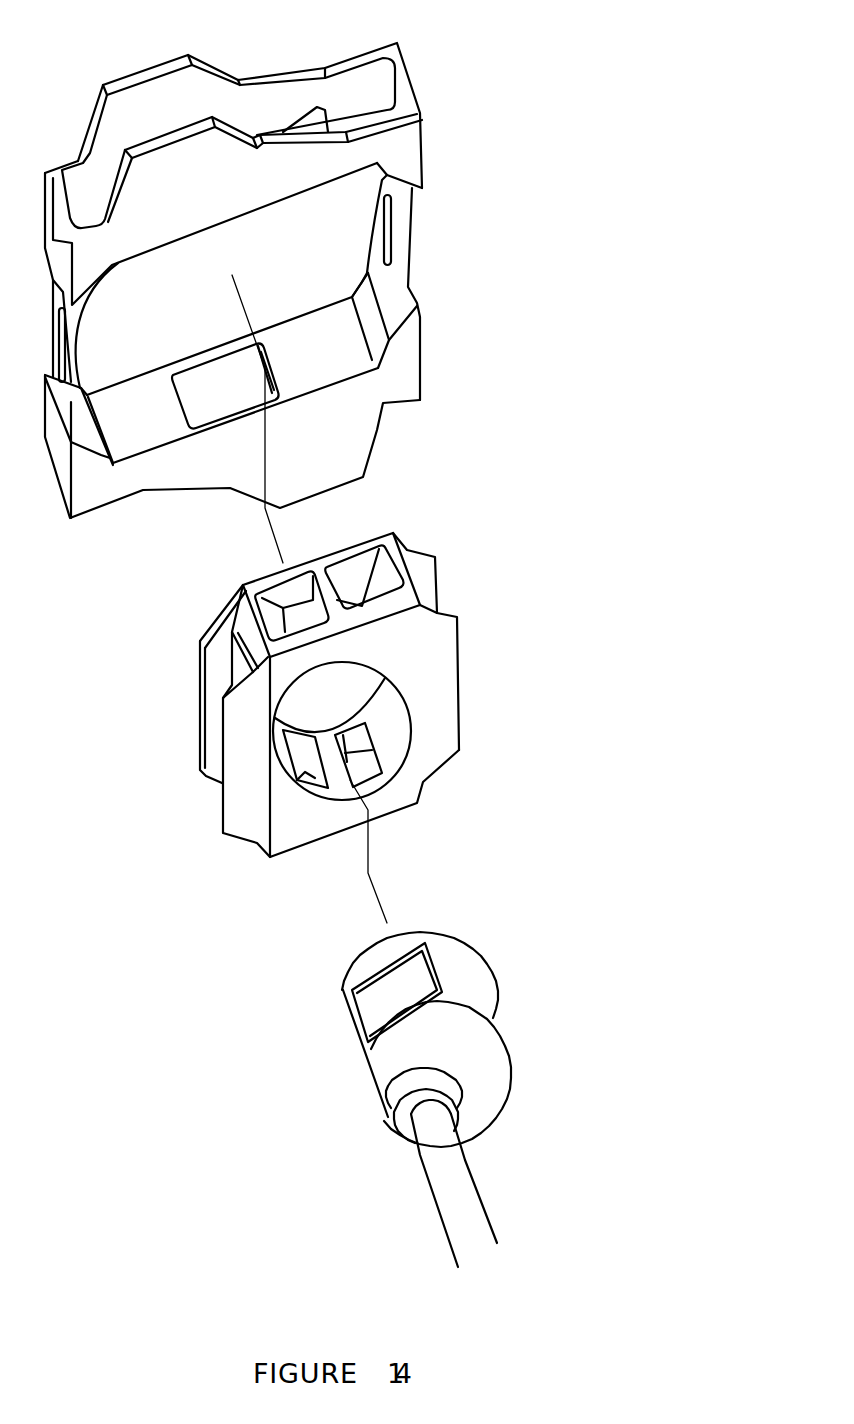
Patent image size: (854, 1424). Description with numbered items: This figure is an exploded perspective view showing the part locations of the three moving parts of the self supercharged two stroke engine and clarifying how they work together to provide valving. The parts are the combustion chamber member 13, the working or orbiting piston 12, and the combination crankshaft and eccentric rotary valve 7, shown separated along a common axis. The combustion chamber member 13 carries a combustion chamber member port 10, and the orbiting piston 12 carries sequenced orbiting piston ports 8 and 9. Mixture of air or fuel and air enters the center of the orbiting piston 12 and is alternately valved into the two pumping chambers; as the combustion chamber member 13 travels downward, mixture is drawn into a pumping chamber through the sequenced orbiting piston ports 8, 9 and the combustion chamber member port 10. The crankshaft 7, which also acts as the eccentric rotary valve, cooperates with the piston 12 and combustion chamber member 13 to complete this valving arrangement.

The crankshaft 7 is at (447, 958).
The orbiting piston port 8 is at (290, 598).
The orbiting piston port 9 is at (358, 580).
The combustion chamber member port 10 is at (312, 123).
The working piston 12 is at (443, 663).
The combustion chamber member 13 is at (403, 142).